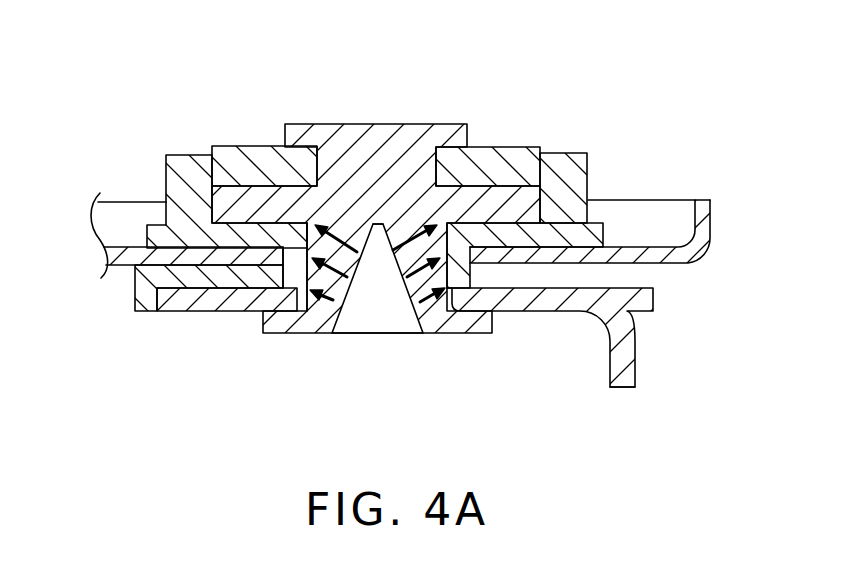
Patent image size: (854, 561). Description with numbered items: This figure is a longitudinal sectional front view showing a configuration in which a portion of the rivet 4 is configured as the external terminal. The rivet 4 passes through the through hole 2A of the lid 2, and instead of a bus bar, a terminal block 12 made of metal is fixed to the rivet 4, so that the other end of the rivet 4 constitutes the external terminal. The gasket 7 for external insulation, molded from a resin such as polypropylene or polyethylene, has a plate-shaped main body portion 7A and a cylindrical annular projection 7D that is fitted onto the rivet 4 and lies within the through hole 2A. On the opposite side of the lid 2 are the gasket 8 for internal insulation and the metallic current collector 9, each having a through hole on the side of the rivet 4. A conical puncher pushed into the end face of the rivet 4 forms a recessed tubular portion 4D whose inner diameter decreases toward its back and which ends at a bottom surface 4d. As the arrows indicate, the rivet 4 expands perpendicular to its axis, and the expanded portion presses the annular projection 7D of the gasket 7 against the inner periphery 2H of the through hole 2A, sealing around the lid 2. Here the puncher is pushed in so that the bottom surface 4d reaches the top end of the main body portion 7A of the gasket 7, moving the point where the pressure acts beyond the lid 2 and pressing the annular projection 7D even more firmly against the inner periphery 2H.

The lid 2 is at (710, 215).
The through hole 2A is at (187, 235).
The inner periphery 2H is at (285, 258).
The rivet 4 is at (370, 124).
The recessed tubular portion 4D is at (340, 302).
The bottom surface 4d is at (377, 227).
The gasket 7 is at (190, 156).
The main body portion 7A is at (212, 303).
The annular projection 7D is at (458, 270).
The gasket 8 is at (135, 287).
The current collector 9 is at (636, 366).
The terminal block 12 is at (245, 146).